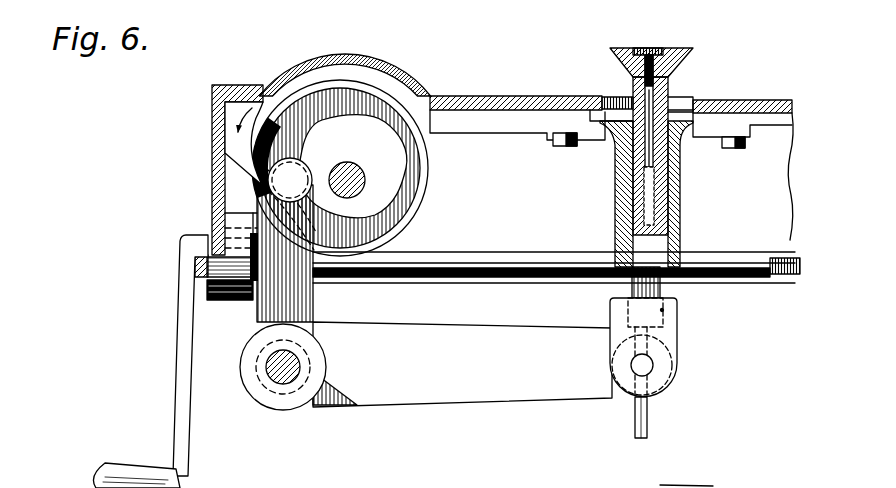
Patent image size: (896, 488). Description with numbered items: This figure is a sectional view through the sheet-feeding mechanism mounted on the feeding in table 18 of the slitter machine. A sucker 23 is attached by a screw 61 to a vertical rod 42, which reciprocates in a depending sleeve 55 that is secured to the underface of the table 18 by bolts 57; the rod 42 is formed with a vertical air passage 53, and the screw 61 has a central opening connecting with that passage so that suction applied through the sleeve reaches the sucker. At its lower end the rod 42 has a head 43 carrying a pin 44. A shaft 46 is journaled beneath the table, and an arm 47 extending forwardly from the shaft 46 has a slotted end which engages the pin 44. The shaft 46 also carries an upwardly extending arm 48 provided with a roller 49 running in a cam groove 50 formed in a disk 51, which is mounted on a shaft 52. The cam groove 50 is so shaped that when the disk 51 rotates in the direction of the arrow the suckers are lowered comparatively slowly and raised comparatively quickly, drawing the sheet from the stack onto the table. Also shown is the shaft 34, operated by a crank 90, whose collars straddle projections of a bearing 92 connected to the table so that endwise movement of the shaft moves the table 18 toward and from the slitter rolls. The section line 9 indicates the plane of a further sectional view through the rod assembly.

The section line 9- 9 is at (651, 47).
The feeding in table 18 is at (508, 80).
The sucker 23 is at (692, 55).
The shaft 34 is at (556, 284).
The vertical rod 42 is at (648, 262).
The head 43 is at (656, 385).
The pin 44 is at (651, 365).
The shaft 46 is at (288, 378).
The arm 47 is at (462, 364).
The upwardly extending arm 48 is at (272, 305).
The roller 49 is at (260, 168).
The cam groove 50 is at (396, 172).
The disk 51 is at (427, 217).
The shaft 52 is at (352, 200).
The vertical air passage 53 is at (667, 110).
The depending sleeve 55 is at (681, 199).
The bolt 57 is at (567, 146).
The screw 61 is at (663, 57).
The crank 90 is at (186, 433).
The bearing 92 is at (207, 283).